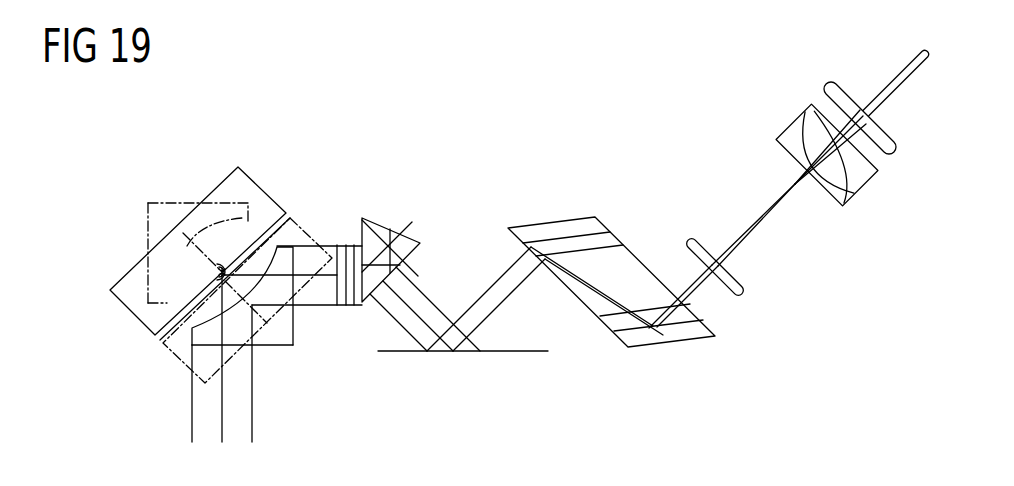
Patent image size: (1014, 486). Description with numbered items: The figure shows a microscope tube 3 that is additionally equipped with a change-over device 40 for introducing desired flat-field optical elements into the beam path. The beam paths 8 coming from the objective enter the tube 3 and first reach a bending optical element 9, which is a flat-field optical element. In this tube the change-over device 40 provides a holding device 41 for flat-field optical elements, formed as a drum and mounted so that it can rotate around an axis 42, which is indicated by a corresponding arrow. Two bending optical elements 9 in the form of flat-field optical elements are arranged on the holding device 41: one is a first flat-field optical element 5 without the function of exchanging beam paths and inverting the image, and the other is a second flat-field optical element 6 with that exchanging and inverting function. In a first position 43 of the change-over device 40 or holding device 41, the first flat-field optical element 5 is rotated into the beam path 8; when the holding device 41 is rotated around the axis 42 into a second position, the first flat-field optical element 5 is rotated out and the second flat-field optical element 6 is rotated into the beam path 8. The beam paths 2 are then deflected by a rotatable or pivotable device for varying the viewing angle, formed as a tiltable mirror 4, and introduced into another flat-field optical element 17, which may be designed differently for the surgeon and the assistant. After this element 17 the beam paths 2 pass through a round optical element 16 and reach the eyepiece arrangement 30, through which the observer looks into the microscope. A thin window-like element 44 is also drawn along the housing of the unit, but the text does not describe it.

The change-over device 40 is at (82, 194).
The first position 43 is at (143, 326).
The window 44 is at (311, 238).
The holding device 41 is at (188, 366).
The second flat-field optical element 6 is at (150, 218).
The bending optical element 9 is at (150, 238).
The axis 42 is at (214, 271).
The first flat-field optical element 5 is at (288, 331).
The beam paths 8 is at (253, 418).
The beam paths 2 is at (432, 307).
The tiltable mirror 4 is at (515, 352).
The tube 3 is at (471, 212).
The flat-field optical element 17 is at (653, 347).
The round optical element 16 is at (693, 243).
The eyepiece arrangement 30 is at (830, 93).